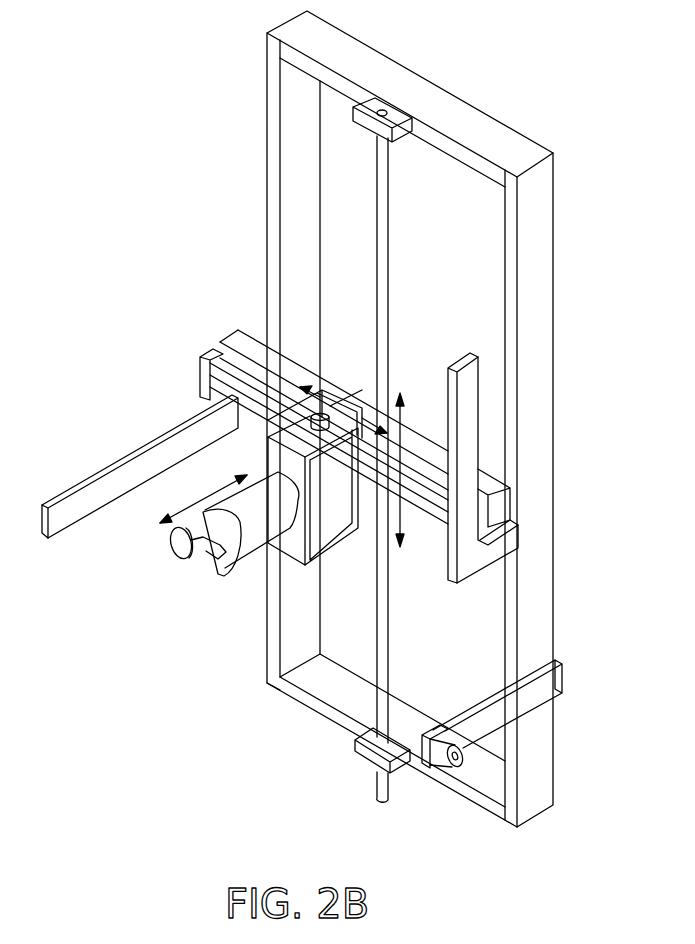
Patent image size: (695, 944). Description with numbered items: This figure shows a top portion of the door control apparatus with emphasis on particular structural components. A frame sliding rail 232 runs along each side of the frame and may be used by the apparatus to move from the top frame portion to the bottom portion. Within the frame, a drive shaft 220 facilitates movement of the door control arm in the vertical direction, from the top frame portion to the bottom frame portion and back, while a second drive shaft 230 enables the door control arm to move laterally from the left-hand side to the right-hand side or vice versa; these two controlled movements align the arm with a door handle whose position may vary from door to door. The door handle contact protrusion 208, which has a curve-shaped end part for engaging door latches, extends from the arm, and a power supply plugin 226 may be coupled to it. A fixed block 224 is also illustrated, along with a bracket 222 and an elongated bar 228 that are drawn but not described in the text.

The frame sliding rail 232 is at (270, 143).
The drive shaft 220 is at (386, 212).
The drive shaft 230 is at (224, 376).
The L-shaped bracket 222 is at (462, 376).
The elongated bar 228 is at (88, 483).
The door handle contact protrusion 208 is at (247, 543).
The power supply plugin 226 is at (172, 543).
The fixed block 224 is at (445, 747).